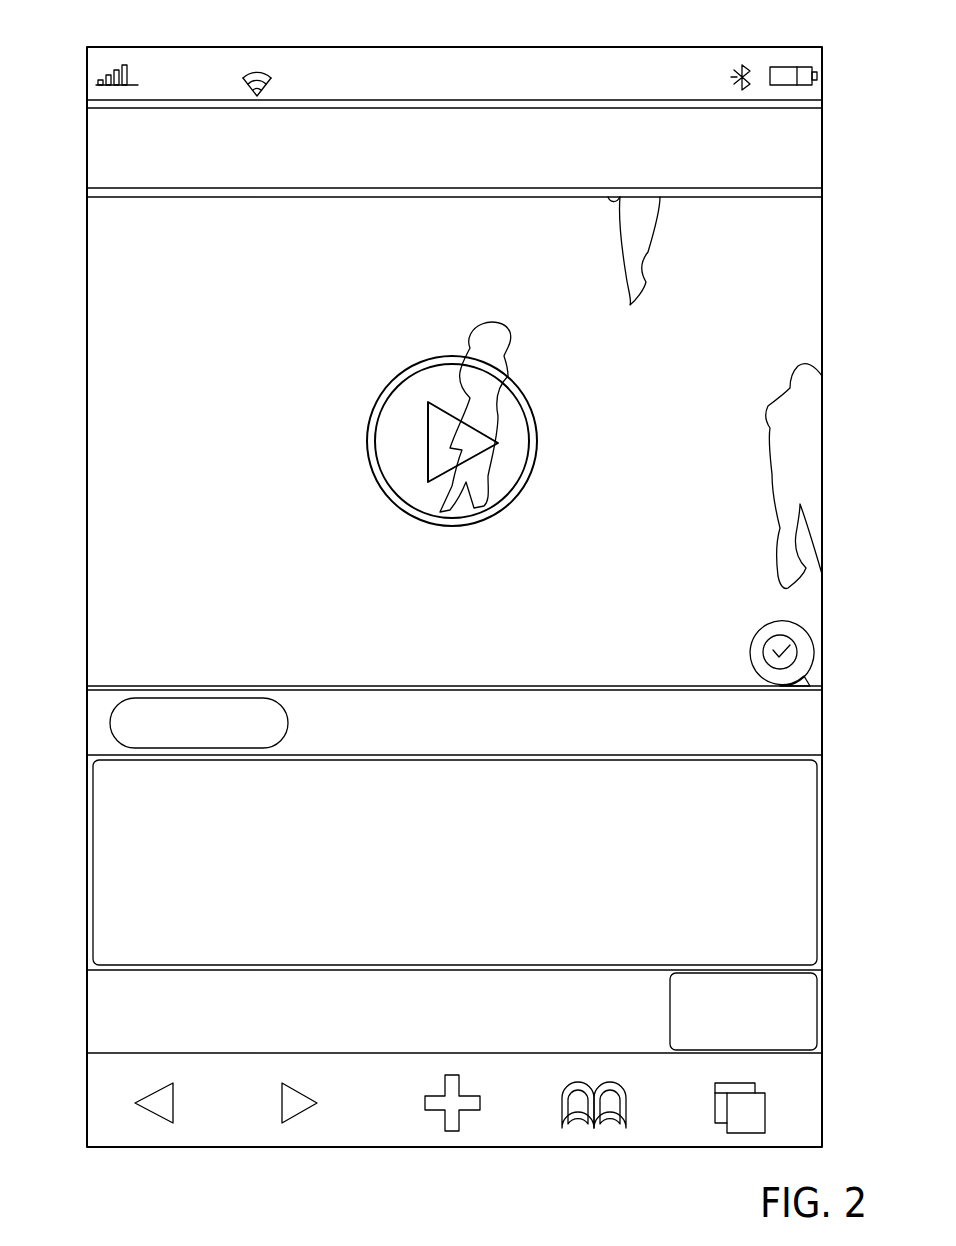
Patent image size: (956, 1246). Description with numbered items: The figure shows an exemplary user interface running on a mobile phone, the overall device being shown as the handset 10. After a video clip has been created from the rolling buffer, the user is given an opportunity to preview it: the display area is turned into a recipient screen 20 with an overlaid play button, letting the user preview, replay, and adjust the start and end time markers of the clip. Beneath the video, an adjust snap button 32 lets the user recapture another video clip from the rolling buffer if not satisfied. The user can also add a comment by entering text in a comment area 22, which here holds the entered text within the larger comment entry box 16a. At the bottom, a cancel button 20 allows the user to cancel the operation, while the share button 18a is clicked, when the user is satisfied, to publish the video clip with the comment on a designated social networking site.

The mobile device 10 is at (630, 34).
The recipient screen 20 is at (790, 300).
The adjust snap button 32 is at (106, 708).
The comment area 22 is at (132, 792).
The text entry box 16a is at (110, 878).
The share button 18a is at (803, 995).